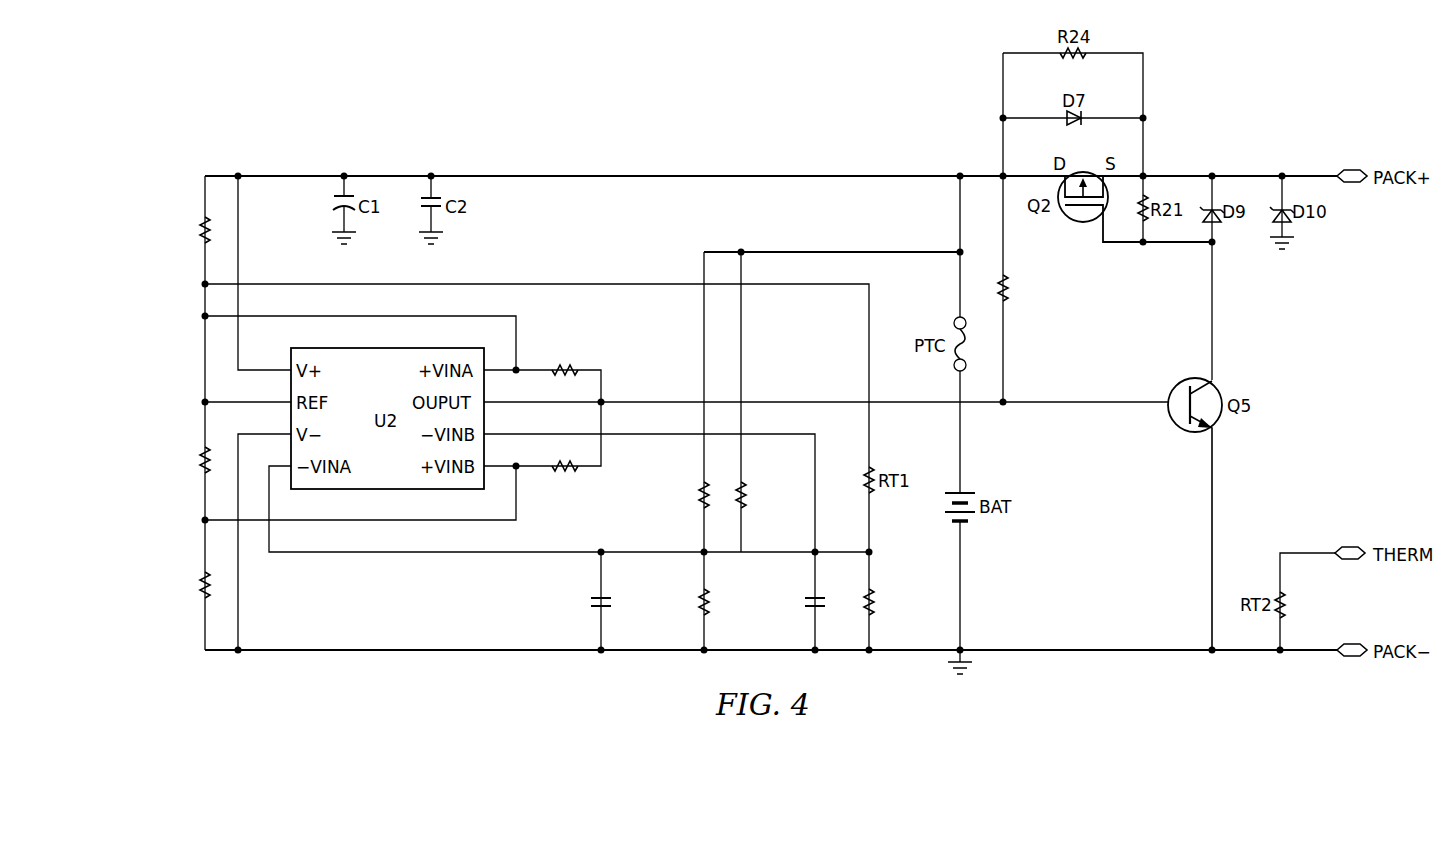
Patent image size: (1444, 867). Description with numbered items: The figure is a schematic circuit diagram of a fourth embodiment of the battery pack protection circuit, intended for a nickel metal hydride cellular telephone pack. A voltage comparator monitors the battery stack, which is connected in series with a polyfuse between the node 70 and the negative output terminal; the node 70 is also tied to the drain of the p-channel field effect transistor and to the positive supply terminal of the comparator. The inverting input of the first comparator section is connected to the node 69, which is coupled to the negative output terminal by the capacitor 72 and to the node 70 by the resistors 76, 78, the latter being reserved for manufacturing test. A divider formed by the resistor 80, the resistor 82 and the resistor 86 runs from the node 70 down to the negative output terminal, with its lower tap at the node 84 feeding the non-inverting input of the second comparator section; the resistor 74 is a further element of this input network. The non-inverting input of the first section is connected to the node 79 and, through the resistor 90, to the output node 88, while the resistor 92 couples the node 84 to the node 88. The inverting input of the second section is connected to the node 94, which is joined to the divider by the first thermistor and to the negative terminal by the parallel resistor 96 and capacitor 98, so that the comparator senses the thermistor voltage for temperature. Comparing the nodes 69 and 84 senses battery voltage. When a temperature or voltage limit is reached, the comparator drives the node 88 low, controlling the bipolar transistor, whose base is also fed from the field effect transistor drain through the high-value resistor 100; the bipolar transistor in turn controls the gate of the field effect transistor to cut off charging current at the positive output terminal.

The node 70 is at (238, 174).
The resistor 80 is at (200, 228).
The node 79 is at (204, 367).
The resistor 82 is at (200, 458).
The node 84 is at (204, 522).
The resistor 86 is at (200, 583).
The resistor 90 is at (559, 366).
The resistor 92 is at (559, 475).
The node 88 is at (607, 400).
The node 69 is at (602, 549).
The capacitor 72 is at (589, 602).
The resistor 76 is at (699, 490).
The resistor 78 is at (746, 494).
The resistor 74 is at (709, 606).
The capacitor 98 is at (805, 600).
The node 94 is at (872, 554).
The resistor 96 is at (874, 602).
The resistor 100 is at (1011, 286).